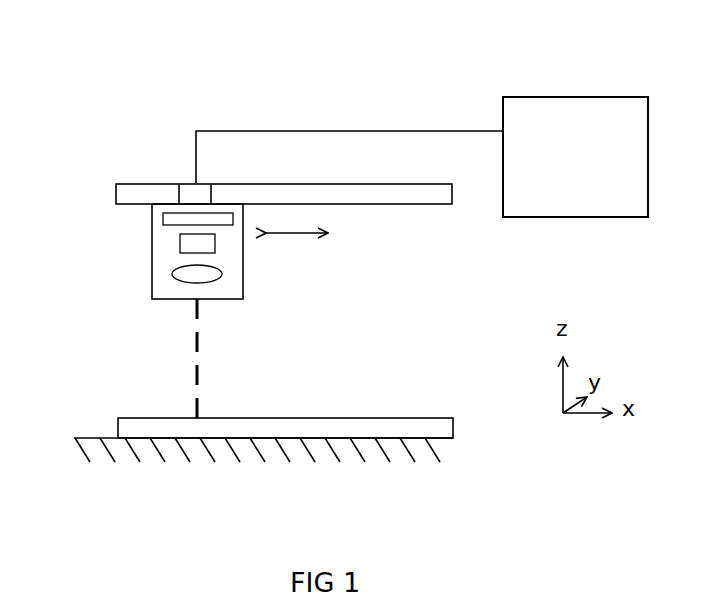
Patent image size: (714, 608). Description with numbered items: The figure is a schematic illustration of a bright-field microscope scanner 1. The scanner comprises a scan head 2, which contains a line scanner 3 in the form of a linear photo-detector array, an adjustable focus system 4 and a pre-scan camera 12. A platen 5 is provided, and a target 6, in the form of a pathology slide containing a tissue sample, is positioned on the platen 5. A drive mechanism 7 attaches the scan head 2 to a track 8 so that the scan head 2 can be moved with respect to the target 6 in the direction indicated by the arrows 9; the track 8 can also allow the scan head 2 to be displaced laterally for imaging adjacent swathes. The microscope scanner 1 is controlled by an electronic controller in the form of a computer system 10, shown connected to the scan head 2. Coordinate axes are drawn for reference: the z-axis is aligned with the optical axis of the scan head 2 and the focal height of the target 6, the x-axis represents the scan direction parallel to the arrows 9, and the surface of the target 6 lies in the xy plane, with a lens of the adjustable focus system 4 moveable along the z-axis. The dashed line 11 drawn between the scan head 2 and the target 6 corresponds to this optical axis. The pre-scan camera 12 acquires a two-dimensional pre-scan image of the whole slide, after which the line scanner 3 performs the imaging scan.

The microscope scanner 1 is at (122, 68).
The scan head 2 is at (153, 264).
The line scanner 3 is at (177, 219).
The adjustable focus system 4 is at (173, 276).
The platen 5 is at (110, 462).
The target 6 is at (403, 417).
The drive mechanism 7 is at (207, 185).
The track 8 is at (290, 183).
The arrows 9 is at (297, 250).
The computer system 10 is at (594, 160).
The beam / material flow 11 is at (187, 390).
The pre-scan camera 12 is at (190, 246).